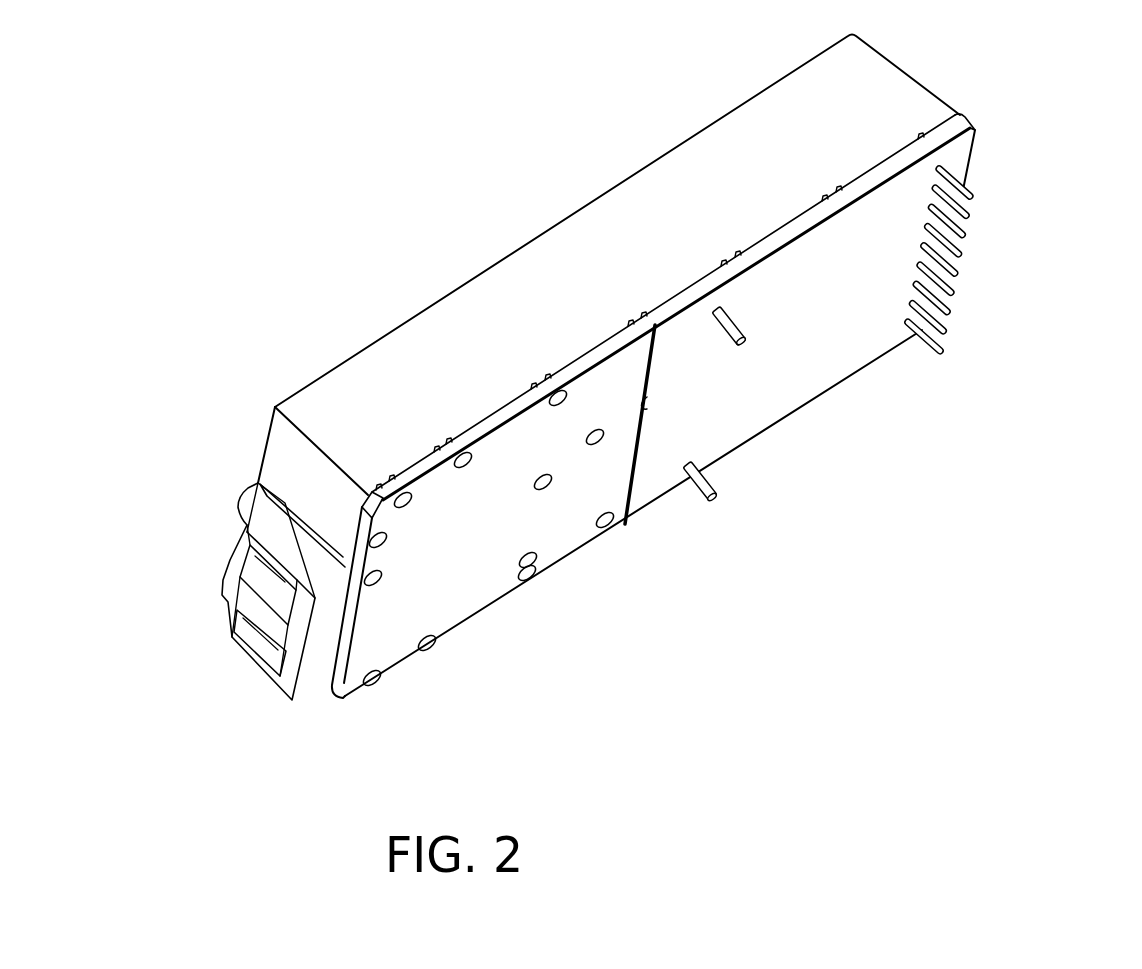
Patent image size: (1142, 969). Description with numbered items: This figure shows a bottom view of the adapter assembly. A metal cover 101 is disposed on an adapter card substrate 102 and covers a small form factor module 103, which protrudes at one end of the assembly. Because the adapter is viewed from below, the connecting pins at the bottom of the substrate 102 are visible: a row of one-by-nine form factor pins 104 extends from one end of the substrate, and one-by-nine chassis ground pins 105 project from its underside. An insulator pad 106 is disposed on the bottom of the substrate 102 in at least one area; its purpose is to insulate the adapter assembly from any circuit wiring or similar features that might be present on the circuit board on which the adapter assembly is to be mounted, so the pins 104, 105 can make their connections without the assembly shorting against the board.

The metal cover 101 is at (542, 232).
The adapter card substrate 102 is at (462, 583).
The small form factor (SFF) module 103 is at (228, 633).
The 1×9 form factor pins 104 is at (948, 370).
The 1×9 chassis ground pins 105 is at (723, 347).
The insulator pad 106 is at (790, 333).